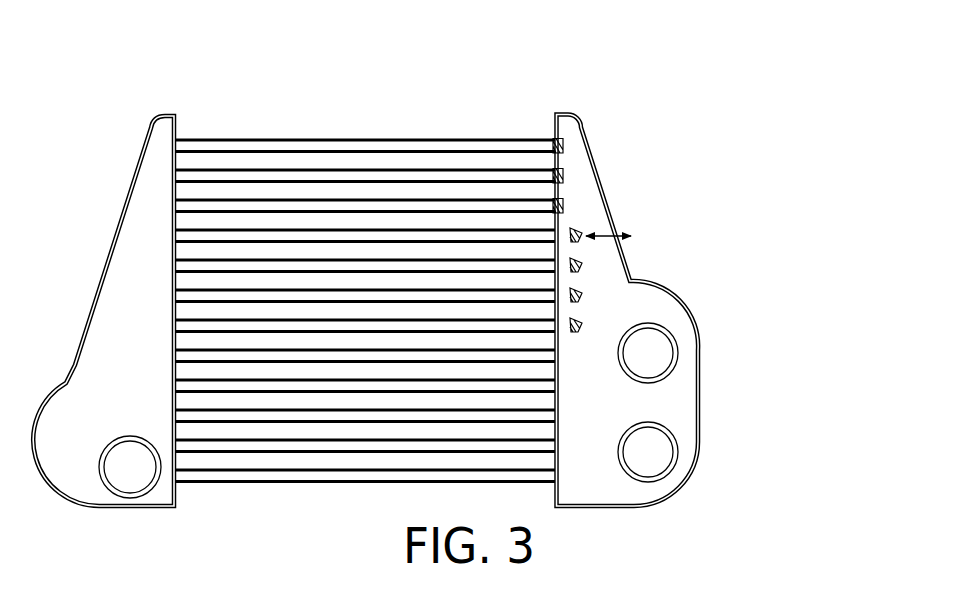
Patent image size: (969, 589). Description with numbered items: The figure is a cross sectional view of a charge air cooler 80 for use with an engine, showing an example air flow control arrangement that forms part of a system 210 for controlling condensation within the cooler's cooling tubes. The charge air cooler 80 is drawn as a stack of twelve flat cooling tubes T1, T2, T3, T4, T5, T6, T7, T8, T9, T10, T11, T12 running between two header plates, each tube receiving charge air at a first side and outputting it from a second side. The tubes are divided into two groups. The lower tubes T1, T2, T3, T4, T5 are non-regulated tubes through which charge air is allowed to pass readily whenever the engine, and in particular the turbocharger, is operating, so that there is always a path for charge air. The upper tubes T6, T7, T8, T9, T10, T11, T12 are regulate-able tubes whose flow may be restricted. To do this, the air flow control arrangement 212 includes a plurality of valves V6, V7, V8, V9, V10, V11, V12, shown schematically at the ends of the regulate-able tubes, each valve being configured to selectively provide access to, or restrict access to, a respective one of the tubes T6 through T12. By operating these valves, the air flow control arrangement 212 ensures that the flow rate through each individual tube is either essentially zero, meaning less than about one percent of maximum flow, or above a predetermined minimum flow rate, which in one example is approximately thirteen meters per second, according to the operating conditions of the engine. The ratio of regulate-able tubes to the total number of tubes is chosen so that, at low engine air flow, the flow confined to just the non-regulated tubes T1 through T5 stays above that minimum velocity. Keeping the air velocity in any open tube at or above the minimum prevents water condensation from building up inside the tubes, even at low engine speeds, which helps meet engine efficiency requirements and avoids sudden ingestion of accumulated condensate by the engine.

The charge air cooler 80 is at (460, 291).
The system 210 is at (173, 93).
The air flow control arrangement 212 is at (697, 158).
The cooling tube T1 is at (193, 480).
The cooling tube T2 is at (233, 447).
The cooling tube T3 is at (283, 417).
The cooling tube T4 is at (308, 385).
The cooling tube T5 is at (353, 355).
The regulate-able cooling tube T6 is at (210, 327).
The regulate-able cooling tube T7 is at (237, 297).
The regulate-able cooling tube T8 is at (285, 263).
The regulate-able cooling tube T9 is at (320, 240).
The regulate-able cooling tube T10 is at (367, 208).
The regulate-able cooling tube T11 is at (407, 177).
The regulate-able cooling tube T12 is at (475, 147).
The valve V6 is at (582, 326).
The valve V7 is at (582, 294).
The valve V8 is at (582, 263).
The valve V9 is at (582, 231).
The valve V10 is at (562, 204).
The valve V11 is at (562, 172).
The valve V12 is at (562, 142).